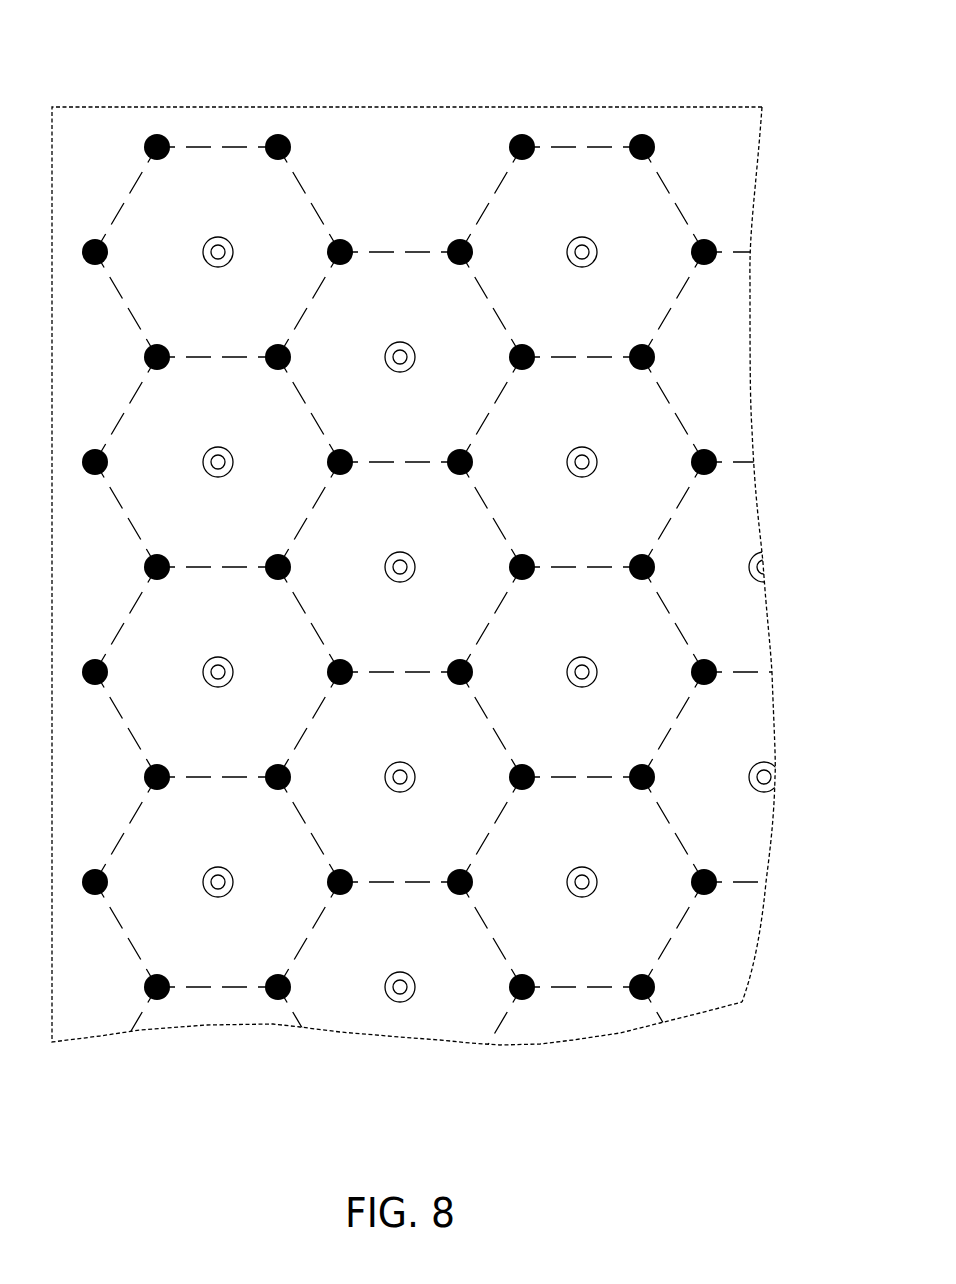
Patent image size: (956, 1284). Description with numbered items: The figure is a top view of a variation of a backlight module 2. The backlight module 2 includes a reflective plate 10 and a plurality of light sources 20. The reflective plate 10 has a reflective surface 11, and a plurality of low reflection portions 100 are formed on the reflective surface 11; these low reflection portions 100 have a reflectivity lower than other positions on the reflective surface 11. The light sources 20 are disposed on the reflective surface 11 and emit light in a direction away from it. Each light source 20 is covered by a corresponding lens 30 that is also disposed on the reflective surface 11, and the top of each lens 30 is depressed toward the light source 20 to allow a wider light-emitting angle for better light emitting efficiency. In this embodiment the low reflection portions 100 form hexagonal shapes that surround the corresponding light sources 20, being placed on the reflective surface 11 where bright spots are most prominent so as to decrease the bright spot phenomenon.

The backlight module 2 is at (86, 30).
The reflective plate 10 is at (724, 106).
The reflective surface 11 is at (745, 146).
The low reflection portions 100 is at (145, 990).
The light sources 20 is at (400, 793).
The lens 30 is at (583, 897).